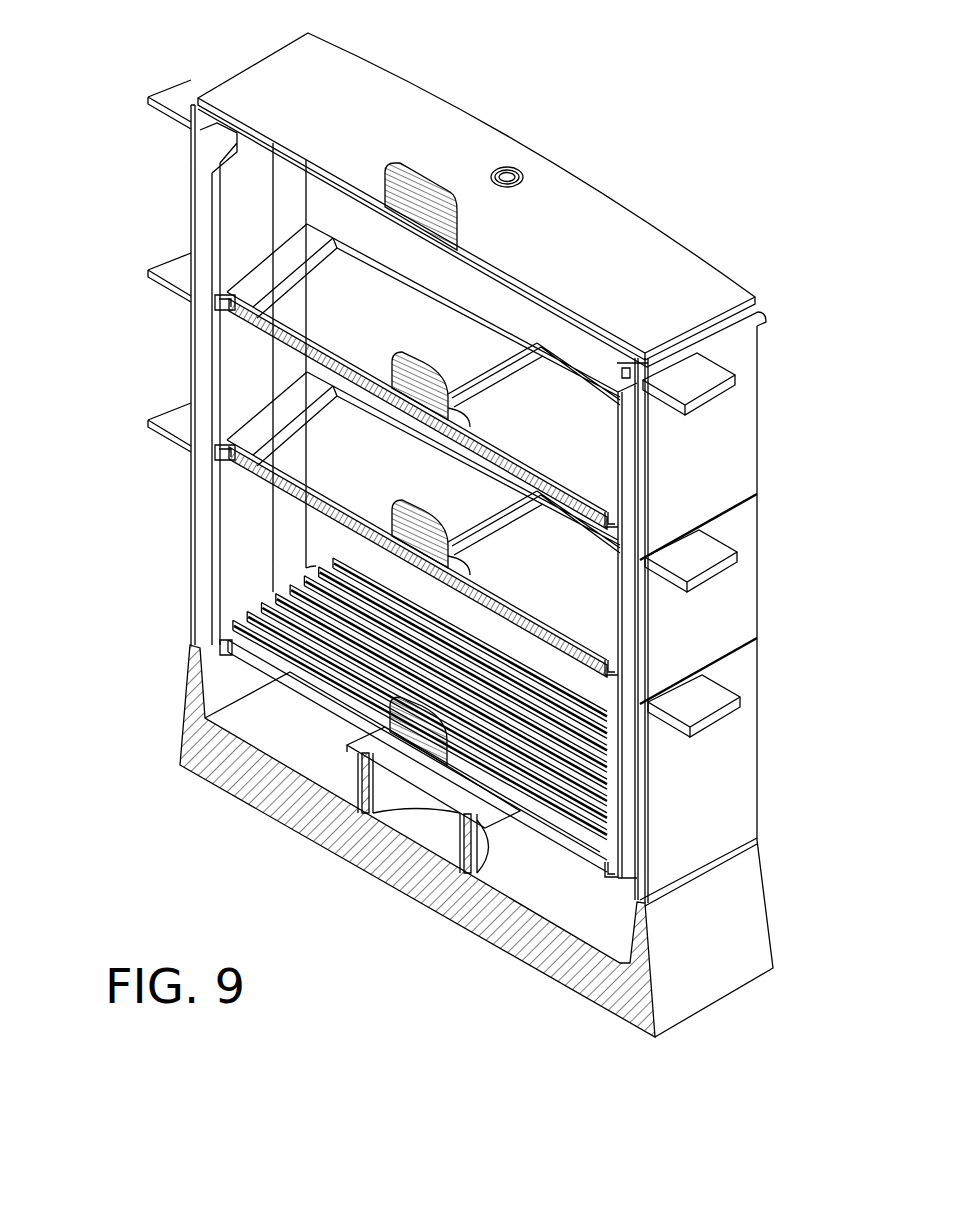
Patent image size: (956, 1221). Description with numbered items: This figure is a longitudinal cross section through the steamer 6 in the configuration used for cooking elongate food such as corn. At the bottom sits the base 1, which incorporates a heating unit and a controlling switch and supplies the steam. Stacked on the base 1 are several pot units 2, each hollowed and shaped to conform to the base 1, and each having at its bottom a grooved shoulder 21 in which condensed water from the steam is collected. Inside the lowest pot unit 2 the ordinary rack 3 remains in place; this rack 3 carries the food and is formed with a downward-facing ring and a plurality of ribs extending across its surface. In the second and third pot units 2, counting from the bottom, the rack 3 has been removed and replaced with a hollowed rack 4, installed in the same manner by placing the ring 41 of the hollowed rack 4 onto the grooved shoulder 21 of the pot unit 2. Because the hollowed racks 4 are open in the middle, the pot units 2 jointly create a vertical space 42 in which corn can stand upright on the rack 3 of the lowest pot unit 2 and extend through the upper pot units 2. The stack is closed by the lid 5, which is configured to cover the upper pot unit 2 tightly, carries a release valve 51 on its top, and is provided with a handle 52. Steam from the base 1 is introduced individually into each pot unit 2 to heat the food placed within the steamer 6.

The base 1 is at (717, 985).
The pot unit 2 is at (740, 443).
The rack 3 is at (260, 653).
The hollowed rack 4 is at (250, 283).
The lid 5 is at (602, 243).
The steamer 6 is at (632, 112).
The grooved shoulder 21 is at (250, 433).
The ring 41 is at (218, 452).
The vertical space 42 is at (338, 292).
The release valve 51 is at (506, 172).
The handle 52 is at (418, 168).